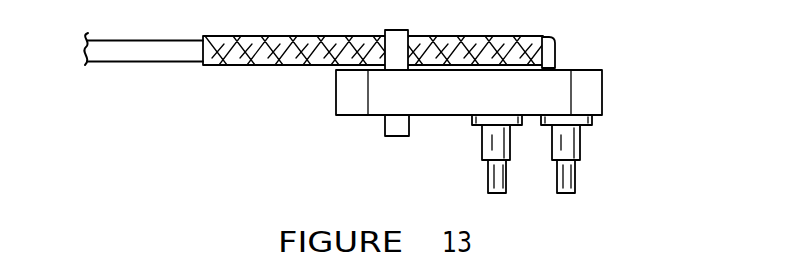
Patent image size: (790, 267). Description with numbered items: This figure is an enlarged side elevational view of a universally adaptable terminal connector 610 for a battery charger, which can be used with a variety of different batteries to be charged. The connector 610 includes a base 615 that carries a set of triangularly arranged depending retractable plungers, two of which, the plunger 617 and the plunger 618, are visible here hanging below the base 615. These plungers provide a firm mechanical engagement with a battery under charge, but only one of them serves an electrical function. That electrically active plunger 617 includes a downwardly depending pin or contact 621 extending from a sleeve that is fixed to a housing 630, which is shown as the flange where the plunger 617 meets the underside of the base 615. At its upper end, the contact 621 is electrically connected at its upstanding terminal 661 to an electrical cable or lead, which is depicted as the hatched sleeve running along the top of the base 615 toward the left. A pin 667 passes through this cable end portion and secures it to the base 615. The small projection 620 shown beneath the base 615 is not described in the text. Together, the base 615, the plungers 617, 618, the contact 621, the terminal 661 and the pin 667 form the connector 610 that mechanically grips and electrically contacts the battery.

The universally adaptable terminal connector 610 is at (198, 126).
The upstanding terminal 661 is at (555, 38).
The pin 667 is at (393, 30).
The base 615 is at (603, 80).
The alignment tab 620 is at (346, 116).
The plunger 618 is at (487, 178).
The housing 630 is at (593, 123).
The plunger 617 is at (581, 153).
The pin or contact 621 is at (577, 186).